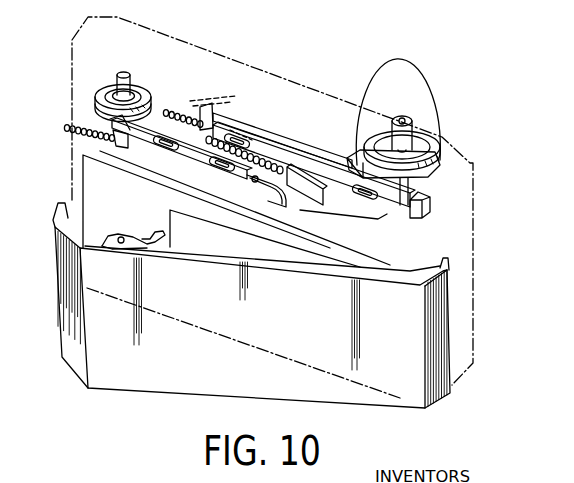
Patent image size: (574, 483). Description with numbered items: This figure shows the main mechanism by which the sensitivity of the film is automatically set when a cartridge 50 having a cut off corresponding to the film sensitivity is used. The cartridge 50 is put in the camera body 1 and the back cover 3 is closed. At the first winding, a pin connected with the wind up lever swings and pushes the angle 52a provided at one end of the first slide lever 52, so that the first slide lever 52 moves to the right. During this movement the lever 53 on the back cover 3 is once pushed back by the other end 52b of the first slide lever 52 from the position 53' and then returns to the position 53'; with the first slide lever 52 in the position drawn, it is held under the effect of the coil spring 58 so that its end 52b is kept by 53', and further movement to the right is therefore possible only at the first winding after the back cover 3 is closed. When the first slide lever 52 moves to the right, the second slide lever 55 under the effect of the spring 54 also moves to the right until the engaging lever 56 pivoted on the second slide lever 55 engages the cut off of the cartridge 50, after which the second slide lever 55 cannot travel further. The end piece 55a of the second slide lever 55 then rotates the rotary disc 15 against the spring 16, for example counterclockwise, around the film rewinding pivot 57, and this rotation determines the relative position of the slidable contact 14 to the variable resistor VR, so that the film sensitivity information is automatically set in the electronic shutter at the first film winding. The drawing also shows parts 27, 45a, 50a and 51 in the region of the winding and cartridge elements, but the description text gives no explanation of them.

The camera body 1 is at (333, 88).
The back cover 3 is at (153, 383).
The slidable contact 14 is at (160, 108).
The rotary disc 15 is at (100, 115).
The spring 16 is at (67, 128).
The knob shaft 27 is at (412, 132).
The dial 45a is at (359, 142).
The cartridge 50 is at (373, 243).
The tray back wall 50a is at (268, 206).
The nut 51 is at (430, 160).
The first slide lever 52 is at (295, 160).
The angle 52a is at (426, 208).
The other end of the first slide lever 52b is at (325, 70).
The lever 53 is at (133, 222).
The position of the lever 53' is at (239, 76).
The spring 54 is at (256, 153).
The second slide lever 55 is at (198, 152).
The end piece 55a is at (110, 118).
The engaging lever 56 is at (288, 207).
The film rewinding pivot 57 is at (110, 82).
The coil spring 58 is at (207, 100).
The variable resistor VR is at (134, 86).